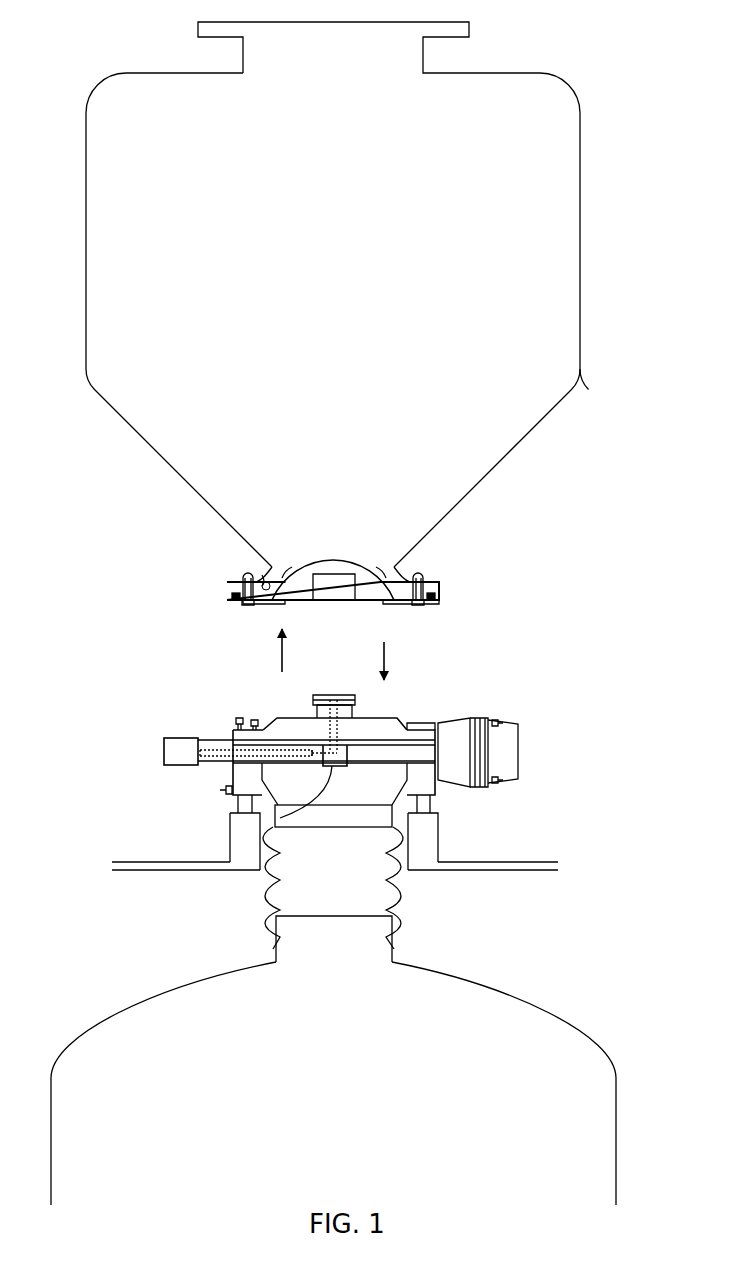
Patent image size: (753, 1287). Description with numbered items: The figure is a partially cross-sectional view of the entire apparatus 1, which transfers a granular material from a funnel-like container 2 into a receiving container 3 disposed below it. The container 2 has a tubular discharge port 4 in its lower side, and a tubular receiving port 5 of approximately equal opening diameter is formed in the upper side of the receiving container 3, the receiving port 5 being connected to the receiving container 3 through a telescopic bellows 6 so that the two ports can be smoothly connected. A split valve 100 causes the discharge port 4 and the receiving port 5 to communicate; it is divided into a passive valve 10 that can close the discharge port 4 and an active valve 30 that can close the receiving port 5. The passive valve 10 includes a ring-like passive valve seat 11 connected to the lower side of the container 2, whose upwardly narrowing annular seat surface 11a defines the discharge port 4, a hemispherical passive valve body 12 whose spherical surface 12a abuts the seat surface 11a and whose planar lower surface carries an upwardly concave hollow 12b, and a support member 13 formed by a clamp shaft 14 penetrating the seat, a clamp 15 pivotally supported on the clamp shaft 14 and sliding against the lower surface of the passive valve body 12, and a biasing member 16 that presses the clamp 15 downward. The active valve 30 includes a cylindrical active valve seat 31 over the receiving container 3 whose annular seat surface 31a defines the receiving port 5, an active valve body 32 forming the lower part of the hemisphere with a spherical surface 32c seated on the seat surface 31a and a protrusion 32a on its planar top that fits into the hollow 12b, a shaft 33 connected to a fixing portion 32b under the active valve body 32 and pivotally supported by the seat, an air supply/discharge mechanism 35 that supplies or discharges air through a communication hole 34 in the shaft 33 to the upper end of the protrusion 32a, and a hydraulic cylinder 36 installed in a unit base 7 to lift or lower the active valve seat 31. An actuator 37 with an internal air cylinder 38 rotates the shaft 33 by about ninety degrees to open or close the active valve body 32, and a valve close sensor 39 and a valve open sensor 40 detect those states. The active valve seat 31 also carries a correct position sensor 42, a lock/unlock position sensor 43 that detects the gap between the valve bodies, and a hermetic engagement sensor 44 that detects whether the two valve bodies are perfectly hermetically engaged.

The apparatus 1 is at (371, 285).
The container 2 is at (581, 238).
The receiving container 3 is at (616, 1090).
The discharge port 4 is at (397, 575).
The receiving port 5 is at (377, 822).
The bellows 6 is at (398, 897).
The unit base 7 is at (512, 862).
The passive valve 10 is at (356, 585).
The passive valve seat 11 is at (438, 590).
The seat surface 11a is at (267, 590).
The passive valve body 12 is at (372, 592).
The spherical surface 12a is at (270, 568).
The hollow 12b is at (340, 600).
The support member 13 is at (428, 601).
The clamp shaft 14 is at (240, 594).
The clamp 15 is at (246, 604).
The biasing member 16 is at (232, 597).
The active valve 30 is at (369, 764).
The active valve seat 31 is at (425, 778).
The seat surface 31a is at (278, 717).
The active valve body 32 is at (380, 723).
The protrusion 32a is at (317, 707).
The fixing portion 32b is at (280, 818).
The spherical surface 32c is at (407, 724).
The shaft 33 is at (228, 763).
The communication hole 34 is at (210, 752).
The air supply/discharge mechanism 35 is at (164, 752).
The hydraulic cylinder 36 is at (230, 851).
The actuator 37 is at (520, 744).
The air cylinder 38 is at (490, 760).
The valve close sensor 39 is at (495, 720).
The valve open sensor 40 is at (496, 783).
The correct position sensor 42 is at (222, 792).
The lock/unlock position sensor 43 is at (250, 727).
The hermetic engagement sensor 44 is at (237, 718).
The split valve 100 is at (369, 697).